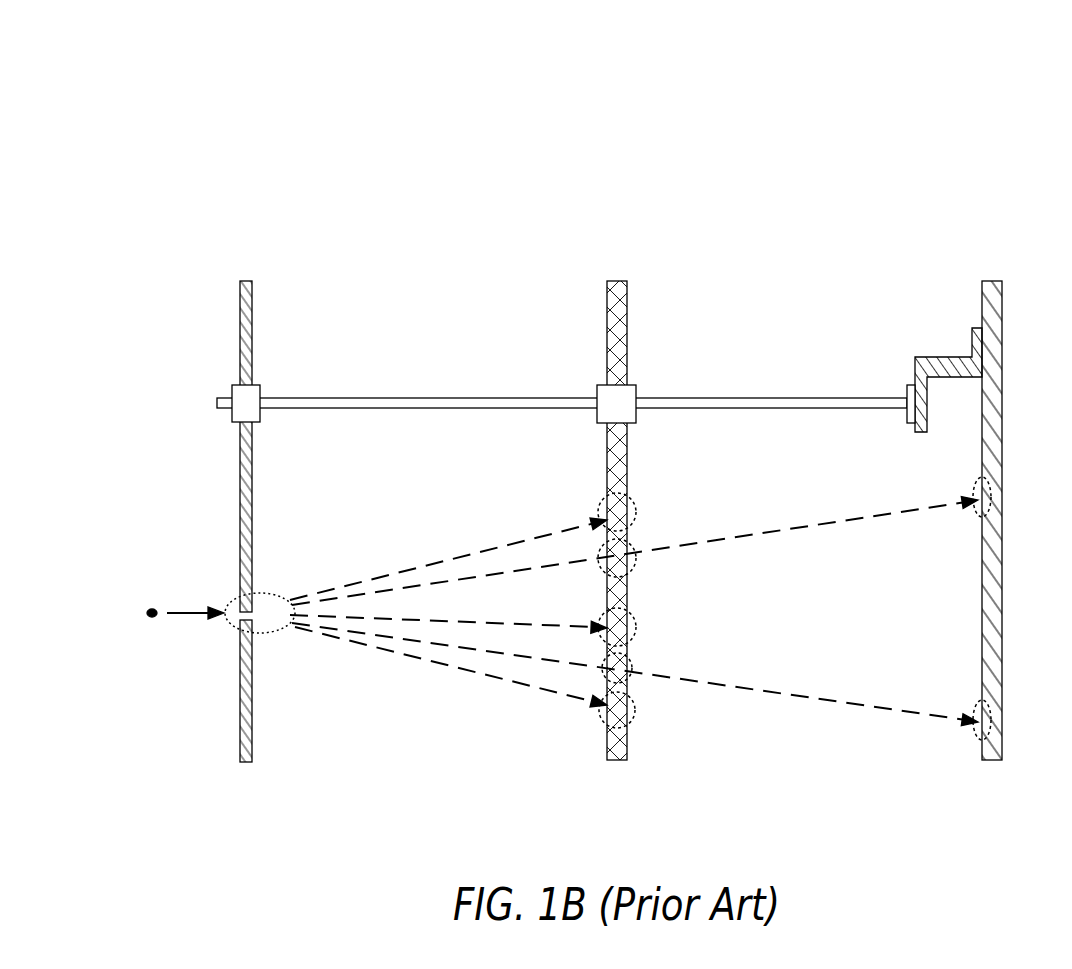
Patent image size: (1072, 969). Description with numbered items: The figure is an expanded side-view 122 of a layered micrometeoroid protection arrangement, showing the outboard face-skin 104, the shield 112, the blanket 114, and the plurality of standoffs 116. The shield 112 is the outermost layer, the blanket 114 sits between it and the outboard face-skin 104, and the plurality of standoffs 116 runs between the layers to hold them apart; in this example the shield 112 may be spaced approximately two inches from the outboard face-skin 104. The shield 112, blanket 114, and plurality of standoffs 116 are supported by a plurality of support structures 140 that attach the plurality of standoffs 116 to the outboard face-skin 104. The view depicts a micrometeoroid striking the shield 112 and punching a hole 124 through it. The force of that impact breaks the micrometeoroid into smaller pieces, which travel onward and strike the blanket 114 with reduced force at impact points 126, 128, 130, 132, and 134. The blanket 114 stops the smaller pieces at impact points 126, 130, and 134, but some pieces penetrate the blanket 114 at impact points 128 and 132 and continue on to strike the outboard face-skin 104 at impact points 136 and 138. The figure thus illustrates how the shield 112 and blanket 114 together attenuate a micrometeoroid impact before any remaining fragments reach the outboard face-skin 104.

The outboard face-skin 104 is at (982, 295).
The shield 112 is at (240, 337).
The blanket 114 is at (607, 318).
The plurality of standoffs 116 is at (488, 398).
The expanded side-view 122 is at (790, 100).
The hole 124 is at (230, 623).
The impact point 126 is at (602, 505).
The impact point 128 is at (632, 543).
The impact point 130 is at (633, 618).
The impact point 132 is at (632, 663).
The impact point 134 is at (632, 718).
The impact point 136 is at (973, 513).
The impact point 138 is at (973, 733).
The plurality of support structures 140 is at (915, 357).